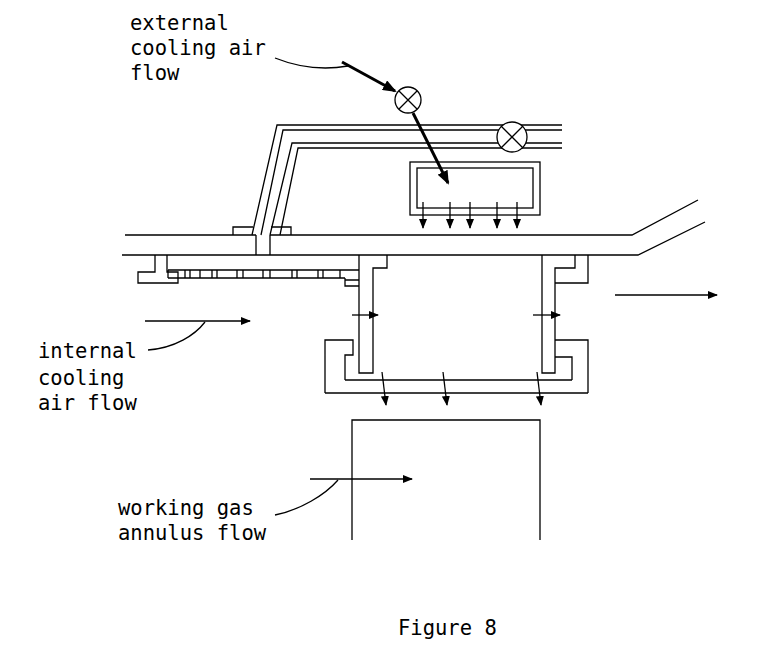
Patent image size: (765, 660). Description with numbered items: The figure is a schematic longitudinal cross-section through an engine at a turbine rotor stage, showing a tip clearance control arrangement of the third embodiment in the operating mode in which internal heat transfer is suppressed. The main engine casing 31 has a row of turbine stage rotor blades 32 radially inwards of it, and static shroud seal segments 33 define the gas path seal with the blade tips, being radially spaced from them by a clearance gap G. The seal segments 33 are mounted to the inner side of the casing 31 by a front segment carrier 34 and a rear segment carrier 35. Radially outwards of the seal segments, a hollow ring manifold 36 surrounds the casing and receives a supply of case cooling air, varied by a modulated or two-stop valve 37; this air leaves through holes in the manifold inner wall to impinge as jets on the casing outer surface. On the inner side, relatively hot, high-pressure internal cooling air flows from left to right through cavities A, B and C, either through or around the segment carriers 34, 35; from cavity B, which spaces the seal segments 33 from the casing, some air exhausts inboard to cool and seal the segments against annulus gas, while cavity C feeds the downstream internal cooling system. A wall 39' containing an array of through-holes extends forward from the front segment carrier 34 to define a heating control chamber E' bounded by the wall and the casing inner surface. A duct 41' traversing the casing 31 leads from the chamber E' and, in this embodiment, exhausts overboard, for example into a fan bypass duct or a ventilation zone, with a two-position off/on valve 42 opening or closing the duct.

The main engine casing 31 is at (155, 243).
The turbine stage rotor blades 32 is at (461, 522).
The static shroud seal segments 33 is at (553, 388).
The front segment carrier 34 is at (363, 342).
The rear segment carrier 35 is at (547, 340).
The ring manifold 36 is at (538, 183).
The valve 37 is at (410, 87).
The wall 39' is at (204, 280).
The duct 41' is at (373, 180).
The 2-position off/on valve 42 is at (521, 124).
The heating control chamber E' is at (178, 219).
The cavity A is at (302, 326).
The cavity B is at (459, 331).
The cavity C is at (681, 337).
The clearance gap G is at (355, 405).